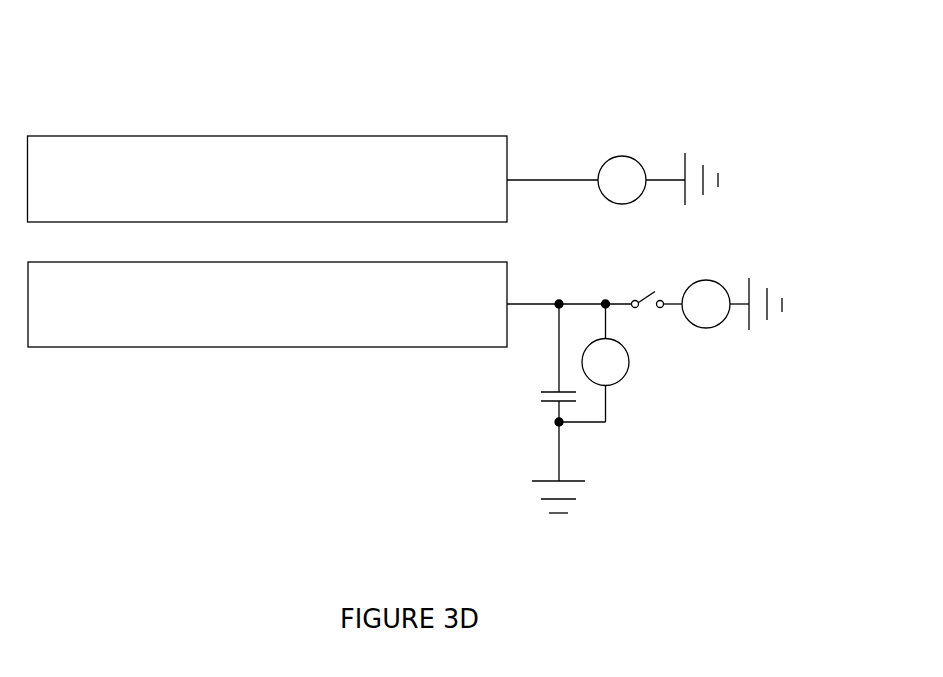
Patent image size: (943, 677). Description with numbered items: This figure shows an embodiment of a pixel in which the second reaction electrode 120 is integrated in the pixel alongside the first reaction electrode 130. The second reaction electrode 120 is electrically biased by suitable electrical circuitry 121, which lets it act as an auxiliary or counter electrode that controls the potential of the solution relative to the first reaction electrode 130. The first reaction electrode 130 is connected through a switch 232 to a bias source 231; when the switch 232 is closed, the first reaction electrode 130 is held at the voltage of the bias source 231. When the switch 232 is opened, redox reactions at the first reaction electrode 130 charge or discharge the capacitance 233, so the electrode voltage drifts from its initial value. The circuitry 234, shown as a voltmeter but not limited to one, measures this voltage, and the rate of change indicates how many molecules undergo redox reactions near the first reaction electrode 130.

The second reaction electrode 120 is at (403, 163).
The first reaction electrode 130 is at (337, 328).
The electrical circuitry 121 is at (627, 154).
The bias source 231 is at (710, 279).
The switch 232 is at (645, 299).
The capacitance 233 is at (537, 402).
The circuitry 234 is at (630, 374).